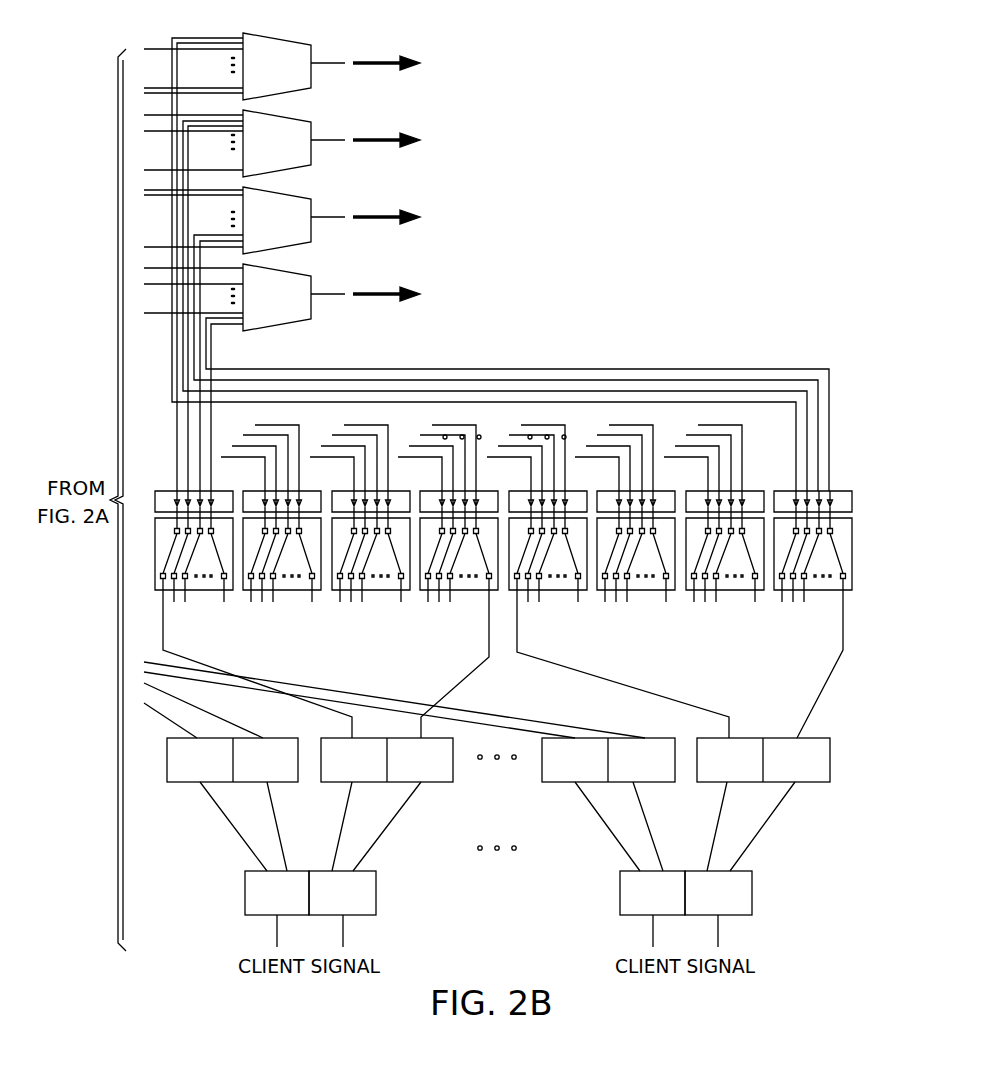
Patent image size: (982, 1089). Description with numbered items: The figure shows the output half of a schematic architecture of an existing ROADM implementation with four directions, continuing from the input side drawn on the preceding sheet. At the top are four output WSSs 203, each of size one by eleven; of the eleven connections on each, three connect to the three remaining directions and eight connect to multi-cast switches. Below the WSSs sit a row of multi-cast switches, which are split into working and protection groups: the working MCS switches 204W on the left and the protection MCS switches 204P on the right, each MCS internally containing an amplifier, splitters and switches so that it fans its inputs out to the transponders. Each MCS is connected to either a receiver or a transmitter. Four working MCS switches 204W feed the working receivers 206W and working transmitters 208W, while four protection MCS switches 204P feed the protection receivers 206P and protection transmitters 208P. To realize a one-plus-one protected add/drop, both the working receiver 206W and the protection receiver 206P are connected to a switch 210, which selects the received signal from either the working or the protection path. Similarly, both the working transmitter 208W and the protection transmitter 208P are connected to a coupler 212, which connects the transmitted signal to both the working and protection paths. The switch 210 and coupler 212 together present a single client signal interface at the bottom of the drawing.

The output WSS 203 is at (313, 46).
The working MCS switch 204W is at (197, 590).
The protection MCS switch 204P is at (551, 590).
The working receiver 206W is at (177, 782).
The working transmitter 208W is at (432, 782).
The protection receiver 206P is at (552, 782).
The protection transmitter 208P is at (707, 782).
The switch 210 is at (245, 893).
The coupler 212 is at (376, 893).